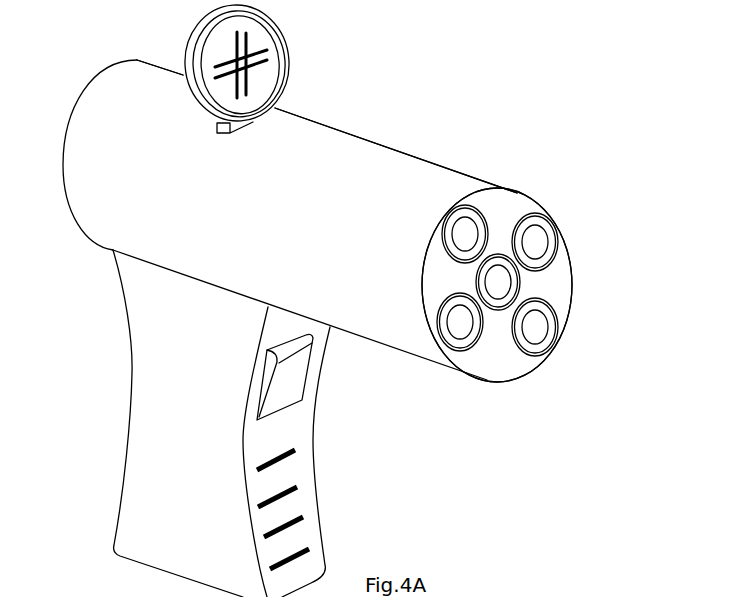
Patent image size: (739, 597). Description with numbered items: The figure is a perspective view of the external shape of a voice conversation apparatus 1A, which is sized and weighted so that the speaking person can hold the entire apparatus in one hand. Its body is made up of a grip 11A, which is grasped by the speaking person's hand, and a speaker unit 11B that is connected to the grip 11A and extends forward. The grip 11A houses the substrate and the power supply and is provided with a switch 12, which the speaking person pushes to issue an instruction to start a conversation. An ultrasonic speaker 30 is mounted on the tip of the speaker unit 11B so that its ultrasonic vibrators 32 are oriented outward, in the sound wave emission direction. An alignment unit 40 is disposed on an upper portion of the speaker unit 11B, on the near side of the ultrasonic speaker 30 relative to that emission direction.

The voice conversation apparatus 1A is at (457, 117).
The grip 11A is at (167, 420).
The speaker unit 11B is at (312, 155).
The switch 12 is at (287, 378).
The ultrasonic speaker 30 is at (505, 227).
The ultrasonic vibrators 32 is at (528, 288).
The alignment unit 40 is at (182, 53).